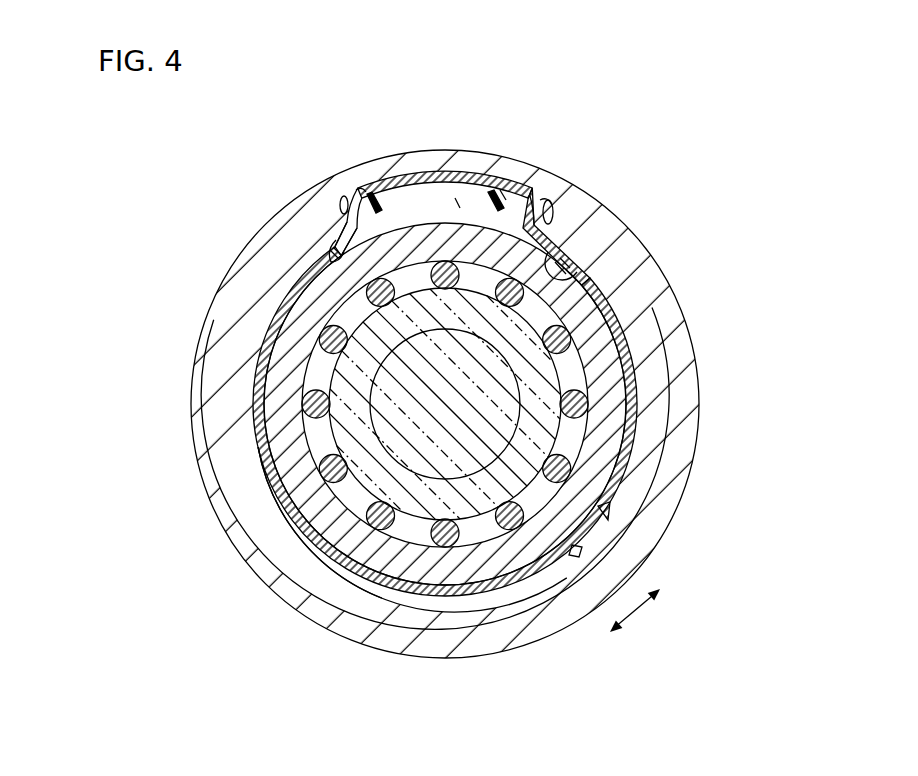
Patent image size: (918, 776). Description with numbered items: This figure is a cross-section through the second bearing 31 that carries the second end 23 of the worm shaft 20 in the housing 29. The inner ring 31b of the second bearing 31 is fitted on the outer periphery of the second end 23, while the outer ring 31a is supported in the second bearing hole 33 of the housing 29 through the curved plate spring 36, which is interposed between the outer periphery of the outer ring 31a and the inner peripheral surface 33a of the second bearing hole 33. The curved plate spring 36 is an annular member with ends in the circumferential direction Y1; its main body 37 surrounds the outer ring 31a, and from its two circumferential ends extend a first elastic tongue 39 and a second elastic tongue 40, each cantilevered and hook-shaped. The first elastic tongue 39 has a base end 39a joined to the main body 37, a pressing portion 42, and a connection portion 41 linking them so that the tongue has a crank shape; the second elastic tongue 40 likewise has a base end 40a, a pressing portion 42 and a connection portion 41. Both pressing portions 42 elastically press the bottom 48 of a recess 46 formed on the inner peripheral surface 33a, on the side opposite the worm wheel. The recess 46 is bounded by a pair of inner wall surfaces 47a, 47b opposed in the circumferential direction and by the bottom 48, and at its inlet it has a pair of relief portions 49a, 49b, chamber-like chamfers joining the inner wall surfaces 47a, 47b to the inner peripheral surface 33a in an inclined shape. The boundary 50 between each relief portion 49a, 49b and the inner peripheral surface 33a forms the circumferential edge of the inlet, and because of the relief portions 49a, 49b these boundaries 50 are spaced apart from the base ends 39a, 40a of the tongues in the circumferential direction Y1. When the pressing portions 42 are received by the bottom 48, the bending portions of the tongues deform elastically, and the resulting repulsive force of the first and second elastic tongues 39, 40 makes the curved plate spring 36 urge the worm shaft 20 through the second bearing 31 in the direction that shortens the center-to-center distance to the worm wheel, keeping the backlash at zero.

The worm shaft 20 is at (358, 392).
The second end 23 is at (392, 430).
The housing 29 is at (215, 477).
The second bearing 31 is at (355, 568).
The outer ring 31a is at (268, 585).
The inner ring 31b is at (338, 520).
The second bearing hole 33 is at (612, 505).
The inner peripheral surface 33a is at (580, 552).
The curved plate spring 36 is at (648, 403).
The main body 37 is at (633, 384).
The first elastic tongue 39 is at (435, 170).
The base end 39a is at (552, 222).
The second elastic tongue 40 is at (356, 188).
The base end 40a is at (332, 260).
The connection portion 41 is at (348, 222).
The pressing portion 42 is at (380, 197).
The recess 46 is at (458, 200).
The inner wall surface 47a is at (550, 205).
The inner wall surface 47b is at (362, 190).
The bottom 48 is at (500, 192).
The relief portion 49a is at (585, 275).
The relief portion 49b is at (333, 243).
The boundary 50 is at (338, 250).
The circumferential direction Y1 is at (636, 612).